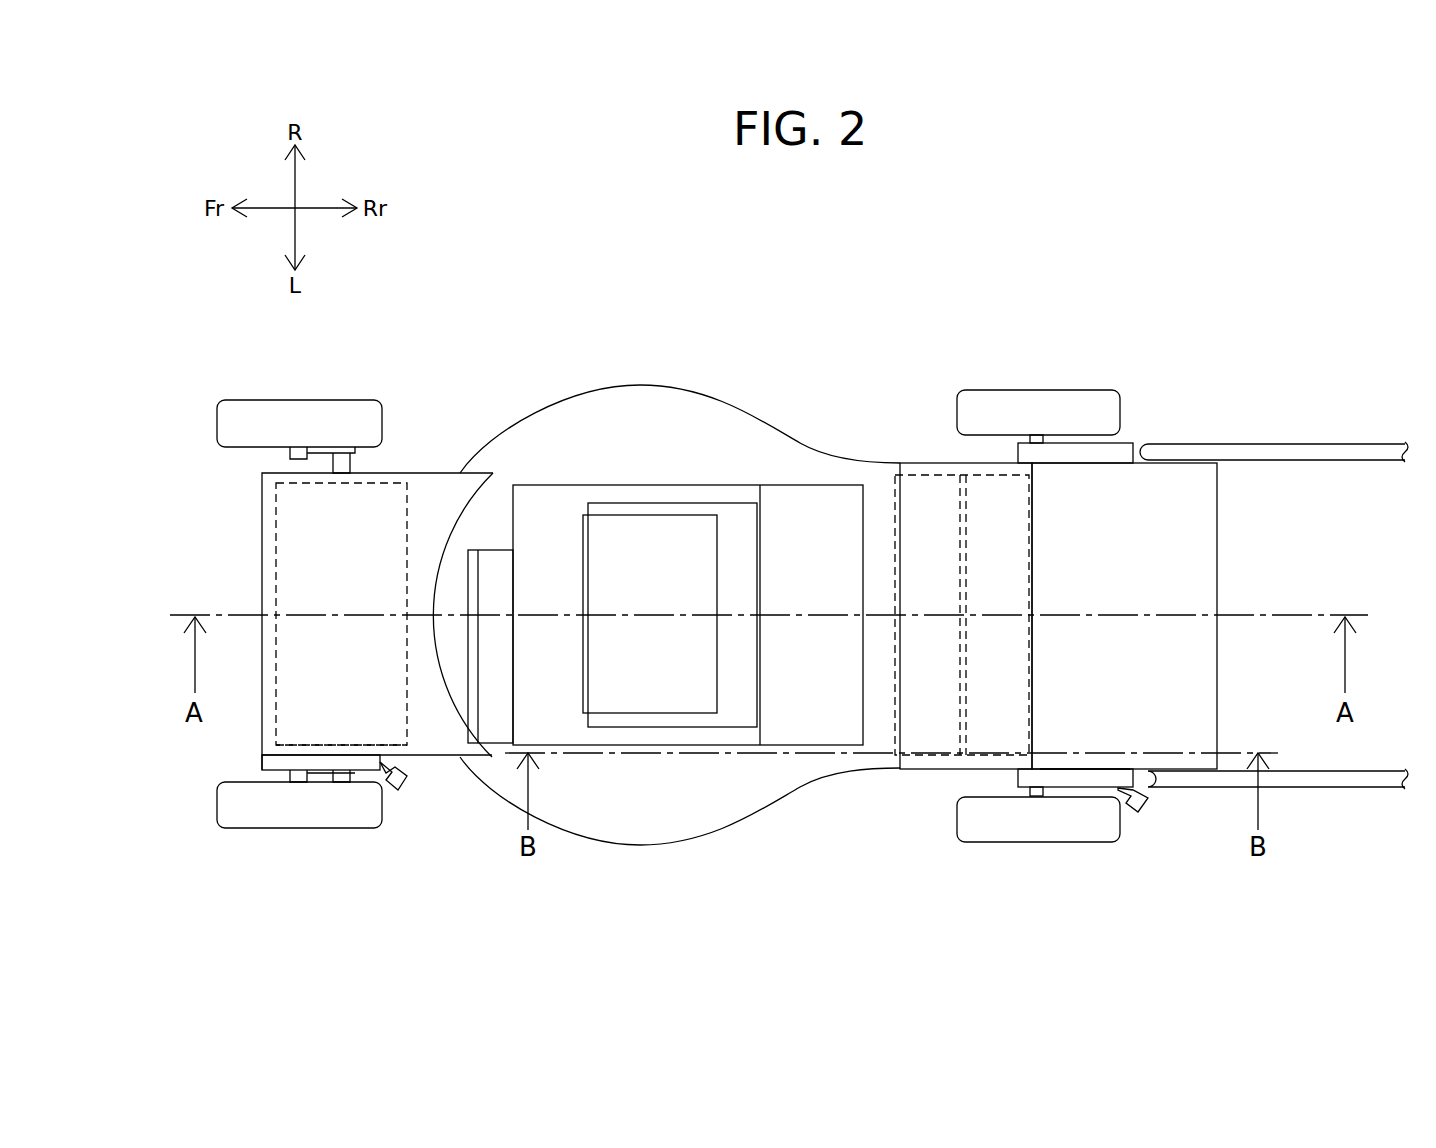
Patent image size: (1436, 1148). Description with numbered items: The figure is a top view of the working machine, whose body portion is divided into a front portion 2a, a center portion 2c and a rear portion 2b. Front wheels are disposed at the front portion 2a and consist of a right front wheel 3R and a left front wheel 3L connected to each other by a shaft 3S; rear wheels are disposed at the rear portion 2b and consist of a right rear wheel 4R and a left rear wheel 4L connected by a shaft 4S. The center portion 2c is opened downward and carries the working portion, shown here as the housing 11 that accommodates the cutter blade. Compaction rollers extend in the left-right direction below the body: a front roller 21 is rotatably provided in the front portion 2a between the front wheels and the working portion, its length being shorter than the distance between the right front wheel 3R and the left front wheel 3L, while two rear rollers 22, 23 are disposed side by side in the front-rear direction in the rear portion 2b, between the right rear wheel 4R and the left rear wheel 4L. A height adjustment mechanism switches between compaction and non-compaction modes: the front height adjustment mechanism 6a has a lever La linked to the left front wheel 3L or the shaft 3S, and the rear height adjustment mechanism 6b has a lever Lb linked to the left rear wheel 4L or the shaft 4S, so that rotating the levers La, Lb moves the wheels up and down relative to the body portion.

The front portion 2a is at (470, 493).
The rear portion 2b is at (1175, 490).
The center portion 2c is at (683, 428).
The right front wheel 3R is at (300, 418).
The left front wheel 3L is at (300, 812).
The shaft 3S is at (342, 463).
The right rear wheel 4R is at (1035, 408).
The left rear wheel 4L is at (1043, 815).
The shaft 4S is at (1040, 440).
The height adjustment mechanism 6a is at (250, 757).
The height adjustment mechanism 6b is at (1092, 760).
The drive unit housing 11 is at (803, 485).
The front roller 21 is at (408, 707).
The rear roller 22 is at (917, 735).
The rear roller 23 is at (983, 733).
The lever La is at (396, 792).
The lever Lb is at (1136, 813).